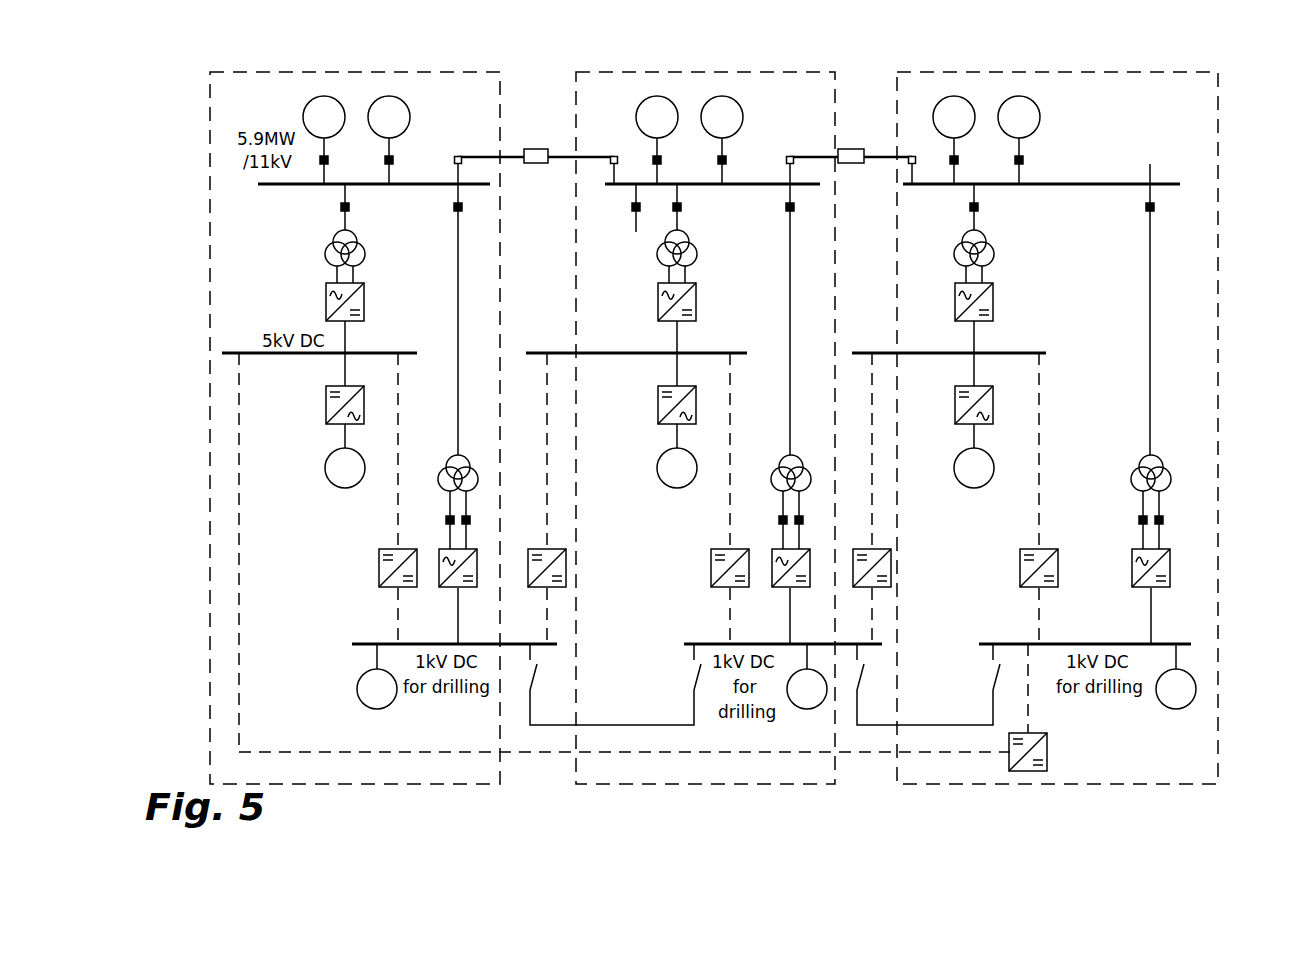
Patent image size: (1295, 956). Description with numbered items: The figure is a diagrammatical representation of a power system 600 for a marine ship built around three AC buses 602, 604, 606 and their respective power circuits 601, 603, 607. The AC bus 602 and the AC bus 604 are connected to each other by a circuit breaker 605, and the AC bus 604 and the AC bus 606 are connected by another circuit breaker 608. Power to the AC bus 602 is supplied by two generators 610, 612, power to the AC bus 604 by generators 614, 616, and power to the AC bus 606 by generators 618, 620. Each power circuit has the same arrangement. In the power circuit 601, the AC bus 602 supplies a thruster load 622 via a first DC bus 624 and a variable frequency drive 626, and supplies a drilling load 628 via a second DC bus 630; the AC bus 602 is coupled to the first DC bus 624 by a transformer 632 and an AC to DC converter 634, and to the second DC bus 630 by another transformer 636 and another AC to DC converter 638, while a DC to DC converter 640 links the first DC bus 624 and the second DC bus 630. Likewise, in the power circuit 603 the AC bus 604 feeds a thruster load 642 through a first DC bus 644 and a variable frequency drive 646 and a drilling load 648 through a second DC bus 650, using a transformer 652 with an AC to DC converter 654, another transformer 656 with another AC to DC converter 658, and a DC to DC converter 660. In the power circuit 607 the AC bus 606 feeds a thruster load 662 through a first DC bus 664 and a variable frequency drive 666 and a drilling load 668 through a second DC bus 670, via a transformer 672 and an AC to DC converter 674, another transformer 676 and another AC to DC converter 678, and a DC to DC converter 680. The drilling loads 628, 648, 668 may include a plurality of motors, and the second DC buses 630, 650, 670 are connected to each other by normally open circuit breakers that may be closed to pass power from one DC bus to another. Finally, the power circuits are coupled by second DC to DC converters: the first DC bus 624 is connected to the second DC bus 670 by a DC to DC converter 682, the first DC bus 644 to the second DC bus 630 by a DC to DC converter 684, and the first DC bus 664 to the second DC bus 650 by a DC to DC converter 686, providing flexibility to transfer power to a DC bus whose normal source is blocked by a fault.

The power system 600 is at (186, 94).
The power circuit 601 is at (209, 200).
The AC bus 602 is at (304, 187).
The power circuit 603 is at (576, 200).
The AC bus 604 is at (735, 185).
The circuit breaker 605 is at (536, 149).
The AC bus 606 is at (1000, 185).
The power circuit 607 is at (1218, 112).
The circuit breaker 608 is at (852, 149).
The generator 610 is at (304, 112).
The generator 612 is at (412, 112).
The generator 614 is at (635, 112).
The generator 616 is at (744, 112).
The generator 618 is at (948, 105).
The generator 620 is at (1039, 112).
The thruster load 622 is at (325, 470).
The first DC bus 624 is at (364, 353).
The variable frequency drive 626 is at (327, 393).
The drilling load 628 is at (357, 691).
The second DC bus 630 is at (360, 643).
The transformer 632 is at (330, 253).
The AC to DC converter 634 is at (326, 288).
The transformer 636 is at (451, 470).
The AC to DC converter 638 is at (439, 588).
The DC to DC converter 640 is at (379, 576).
The thruster load 642 is at (657, 470).
The first DC bus 644 is at (696, 353).
The variable frequency drive 646 is at (659, 393).
The drilling load 648 is at (807, 709).
The second DC bus 650 is at (687, 643).
The transformer 652 is at (690, 253).
The AC to DC converter 654 is at (659, 288).
The transformer 656 is at (782, 470).
The AC to DC converter 658 is at (772, 588).
The DC to DC converter 660 is at (711, 576).
The thruster load 662 is at (953, 470).
The first DC bus 664 is at (997, 353).
The variable frequency drive 666 is at (955, 393).
The drilling load 668 is at (1169, 709).
The second DC bus 670 is at (983, 643).
The transformer 672 is at (960, 253).
The AC to DC converter 674 is at (956, 288).
The transformer 676 is at (1142, 470).
The AC to DC converter 678 is at (1131, 588).
The DC to DC converter 680 is at (1020, 588).
The DC to DC converter 682 is at (1009, 764).
The DC to DC converter 684 is at (527, 588).
The DC to DC converter 686 is at (860, 588).